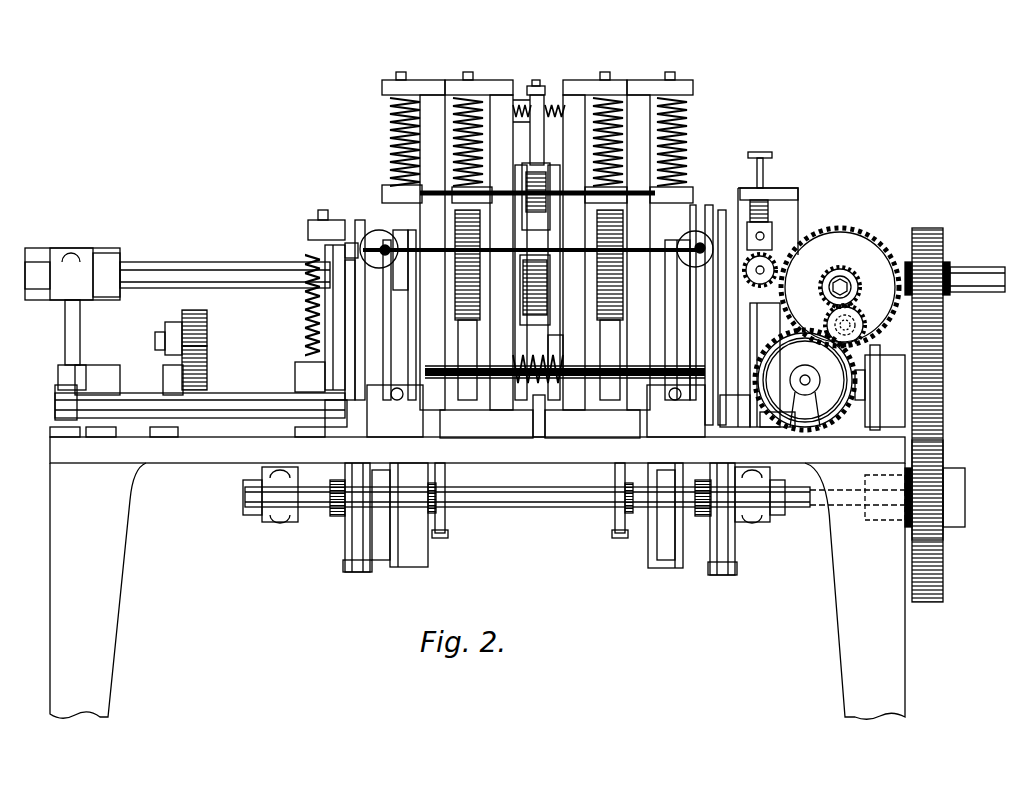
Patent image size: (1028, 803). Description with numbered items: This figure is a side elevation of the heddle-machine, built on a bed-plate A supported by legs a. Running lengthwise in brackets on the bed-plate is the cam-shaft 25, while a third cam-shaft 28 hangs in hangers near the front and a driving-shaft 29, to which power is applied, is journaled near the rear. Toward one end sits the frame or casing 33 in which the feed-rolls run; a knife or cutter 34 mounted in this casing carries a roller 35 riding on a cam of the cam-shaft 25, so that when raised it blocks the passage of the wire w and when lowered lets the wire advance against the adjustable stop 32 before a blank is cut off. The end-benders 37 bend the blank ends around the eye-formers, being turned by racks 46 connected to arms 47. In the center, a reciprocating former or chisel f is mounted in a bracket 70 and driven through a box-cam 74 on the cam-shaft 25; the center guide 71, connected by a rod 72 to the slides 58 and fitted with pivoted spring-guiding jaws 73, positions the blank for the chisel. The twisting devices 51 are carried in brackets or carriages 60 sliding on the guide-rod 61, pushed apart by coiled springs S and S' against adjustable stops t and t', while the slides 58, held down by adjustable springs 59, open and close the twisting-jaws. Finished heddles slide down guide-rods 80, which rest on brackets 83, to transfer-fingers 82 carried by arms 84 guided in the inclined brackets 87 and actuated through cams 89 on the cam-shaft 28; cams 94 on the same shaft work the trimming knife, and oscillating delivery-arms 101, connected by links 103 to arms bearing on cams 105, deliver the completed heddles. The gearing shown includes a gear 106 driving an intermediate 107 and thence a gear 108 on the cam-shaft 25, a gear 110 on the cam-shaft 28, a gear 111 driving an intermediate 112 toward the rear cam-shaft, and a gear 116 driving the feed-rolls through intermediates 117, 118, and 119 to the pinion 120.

The bed-plate A is at (193, 456).
The legs a is at (112, 586).
The cam-shaft 25 is at (78, 398).
The third cam-shaft 28 is at (528, 508).
The driving-shaft 29 is at (975, 282).
The adjustable stop 32 is at (333, 315).
The frame or casing 33 is at (790, 222).
The knife or cutter 34 is at (724, 235).
The roller 35 is at (735, 347).
The end-benders 37 is at (388, 243).
The racks 46 is at (363, 232).
The arms 47 is at (318, 230).
The twisting devices 51 is at (538, 305).
The slides 58 is at (392, 194).
The adjustable springs 59 is at (390, 112).
The brackets or carriages 60 is at (537, 241).
The guide-rod 61 is at (248, 422).
The bracket 70 is at (537, 282).
The center guide 71 is at (538, 96).
The rod 72 is at (527, 108).
The pivoted spring-guiding jaws 73 is at (536, 196).
The box-cam 74 is at (538, 359).
The guide-rods 80 is at (388, 300).
The transfer-fingers 82 is at (536, 411).
The brackets 83 is at (322, 385).
The arms 84 is at (365, 543).
The inclined brackets 87 is at (340, 420).
The cams 89 is at (335, 510).
The cams 94 is at (395, 528).
The oscillating delivery-arms 101 is at (445, 418).
The links 103 is at (440, 538).
The cams 105 is at (448, 512).
The gear 106 is at (930, 242).
The intermediate 107 is at (946, 268).
The gear 108 is at (930, 370).
The gear 110 is at (935, 455).
The gear 111 is at (208, 340).
The intermediate 112 is at (206, 320).
The gear 116 is at (830, 380).
The intermediate 117 is at (853, 338).
The intermediate 118 is at (825, 296).
The intermediate 119 is at (840, 287).
The pinion 120 is at (768, 274).
The coiled spring S is at (525, 414).
The coiled spring S' is at (546, 76).
The reciprocating former or chisel f is at (565, 322).
The adjustable stop t is at (473, 444).
The adjustable stop t' is at (576, 417).
The wire w is at (380, 238).